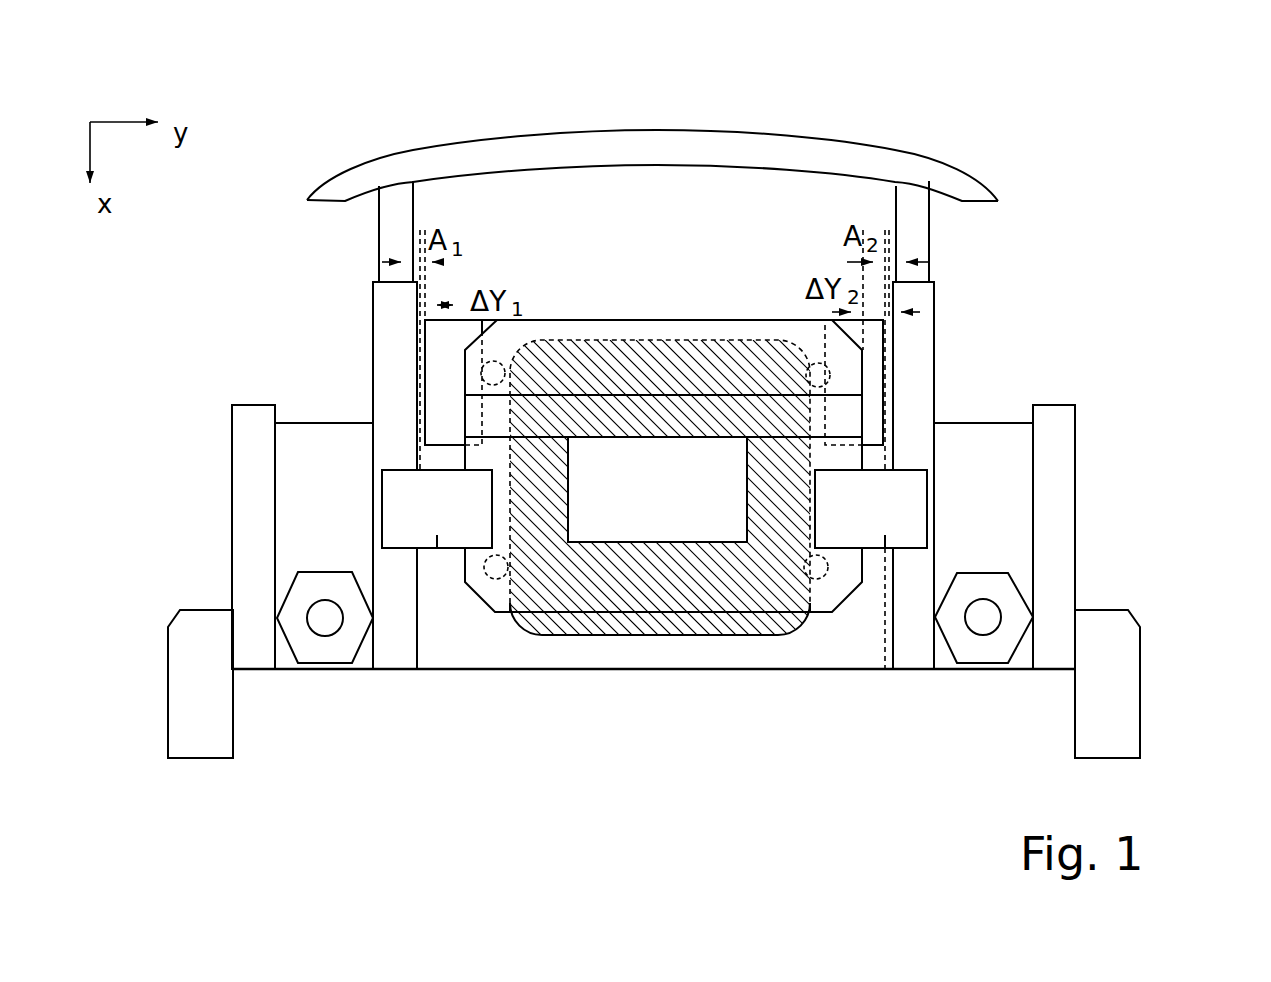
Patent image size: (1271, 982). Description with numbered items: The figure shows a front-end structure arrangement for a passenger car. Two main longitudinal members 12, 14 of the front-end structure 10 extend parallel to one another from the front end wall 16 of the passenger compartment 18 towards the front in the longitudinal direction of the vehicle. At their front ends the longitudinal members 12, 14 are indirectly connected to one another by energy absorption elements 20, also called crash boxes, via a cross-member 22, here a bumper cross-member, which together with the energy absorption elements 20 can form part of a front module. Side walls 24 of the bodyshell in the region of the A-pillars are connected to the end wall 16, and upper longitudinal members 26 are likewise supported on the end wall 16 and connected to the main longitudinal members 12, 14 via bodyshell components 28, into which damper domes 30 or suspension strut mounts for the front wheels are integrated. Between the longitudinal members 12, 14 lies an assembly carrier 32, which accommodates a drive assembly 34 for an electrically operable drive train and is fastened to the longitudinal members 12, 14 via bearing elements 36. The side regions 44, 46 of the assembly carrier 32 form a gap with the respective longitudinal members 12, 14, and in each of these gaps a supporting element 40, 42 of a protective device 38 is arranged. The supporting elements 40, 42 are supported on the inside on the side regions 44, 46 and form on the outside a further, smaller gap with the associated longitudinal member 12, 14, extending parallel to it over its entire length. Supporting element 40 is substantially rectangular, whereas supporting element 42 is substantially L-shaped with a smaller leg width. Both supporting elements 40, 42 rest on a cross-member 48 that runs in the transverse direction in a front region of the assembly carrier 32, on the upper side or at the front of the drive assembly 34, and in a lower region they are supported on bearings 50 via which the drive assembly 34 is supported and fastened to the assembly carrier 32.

The front-end structure 10 is at (1092, 185).
The longitudinal member 12 is at (395, 350).
The longitudinal member 14 is at (913, 350).
The end wall 16 is at (750, 672).
The passenger compartment 18 is at (667, 786).
The energy absorption element 20 is at (388, 247).
The cross-member 22 is at (633, 153).
The side wall 24 is at (192, 708).
The upper longitudinal member 26 is at (245, 518).
The bodyshell component 28 is at (290, 468).
The damper dome 30 is at (297, 603).
The assembly carrier 32 is at (667, 615).
The drive assembly 34 is at (572, 625).
The bearing element 36 is at (438, 550).
The protective device 38 is at (676, 230).
The supporting element 40 is at (438, 406).
The supporting element 42 is at (875, 405).
The side region 44 is at (455, 460).
The side region 46 is at (875, 458).
The cross-member 48 is at (690, 410).
The bearing 50 is at (500, 362).